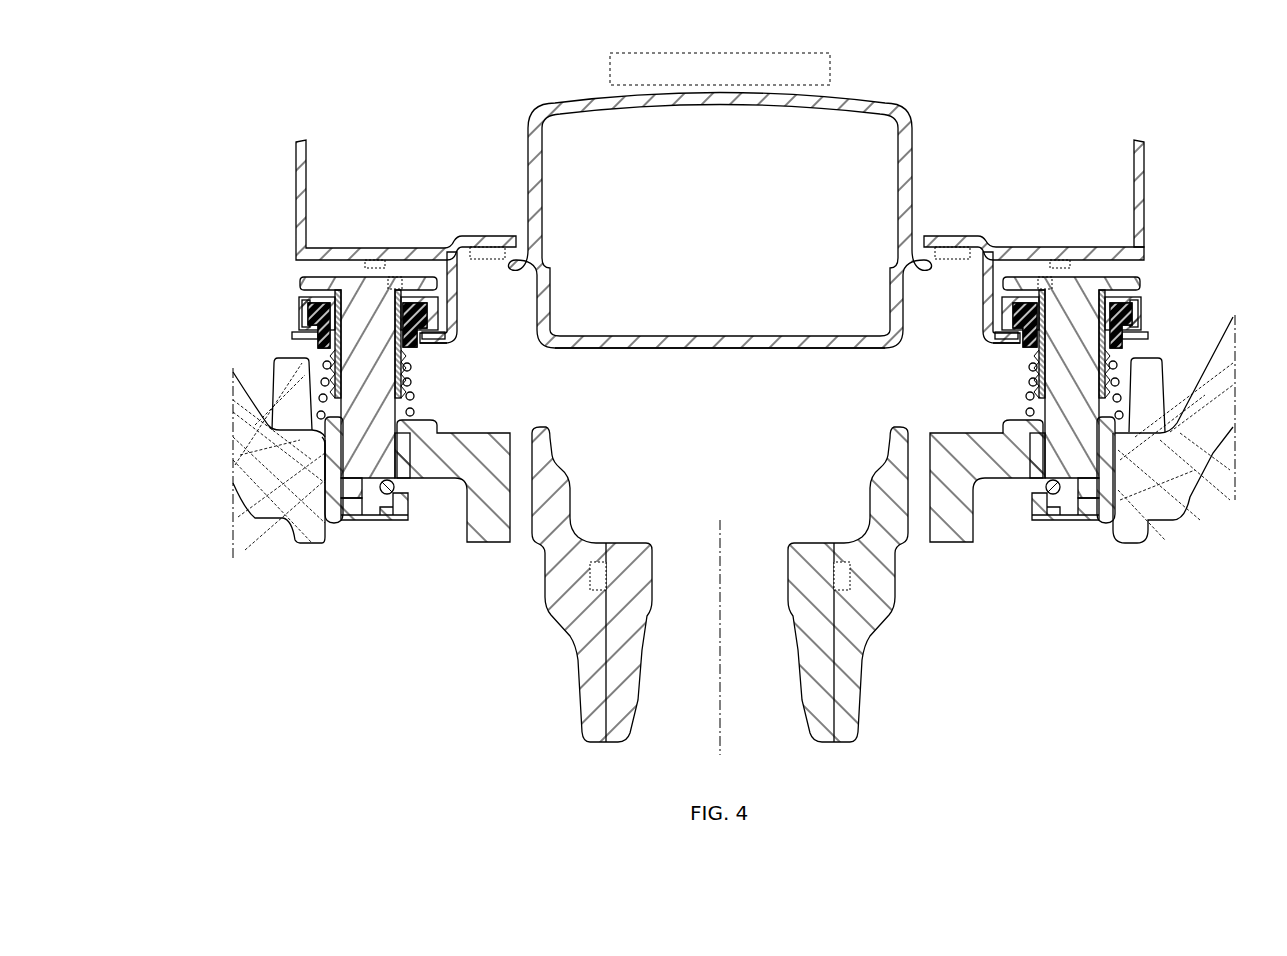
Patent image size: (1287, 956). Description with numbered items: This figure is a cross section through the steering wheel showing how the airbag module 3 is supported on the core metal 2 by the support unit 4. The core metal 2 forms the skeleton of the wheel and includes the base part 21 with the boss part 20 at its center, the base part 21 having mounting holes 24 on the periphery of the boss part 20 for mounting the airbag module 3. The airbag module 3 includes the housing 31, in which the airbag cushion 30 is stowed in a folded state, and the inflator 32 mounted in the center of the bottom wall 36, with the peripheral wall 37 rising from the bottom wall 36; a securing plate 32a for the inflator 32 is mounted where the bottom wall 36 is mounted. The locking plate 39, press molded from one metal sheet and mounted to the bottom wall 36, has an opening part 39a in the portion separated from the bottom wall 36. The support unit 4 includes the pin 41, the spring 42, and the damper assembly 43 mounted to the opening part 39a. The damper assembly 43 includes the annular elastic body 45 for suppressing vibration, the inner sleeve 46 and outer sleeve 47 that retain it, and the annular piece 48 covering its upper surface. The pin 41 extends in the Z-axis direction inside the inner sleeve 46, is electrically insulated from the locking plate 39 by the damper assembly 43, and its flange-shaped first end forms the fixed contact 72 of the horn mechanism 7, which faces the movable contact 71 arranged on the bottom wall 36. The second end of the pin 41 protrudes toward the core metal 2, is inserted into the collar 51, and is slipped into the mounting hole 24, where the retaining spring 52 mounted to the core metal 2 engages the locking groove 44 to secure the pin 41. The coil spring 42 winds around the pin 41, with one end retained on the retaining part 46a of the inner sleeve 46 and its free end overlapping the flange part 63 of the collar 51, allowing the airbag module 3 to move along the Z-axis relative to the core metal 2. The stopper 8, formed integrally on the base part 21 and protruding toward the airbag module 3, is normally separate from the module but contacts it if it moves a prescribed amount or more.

The core metal 2 is at (822, 505).
The airbag module 3 is at (760, 164).
The support unit 4 is at (686, 337).
The horn mechanism 7 is at (724, 227).
The stopper 8 is at (723, 452).
The boss part 20 is at (552, 622).
The base part 21 is at (285, 498).
The mounting hole 24 is at (420, 470).
The airbag cushion 30 is at (836, 74).
The housing 31 is at (1060, 207).
The inflator 32 is at (898, 110).
The securing plate 32a is at (622, 350).
The bottom wall 36 is at (1060, 255).
The peripheral wall 37 is at (1147, 200).
The locking plate 39 is at (458, 282).
The opening part 39a is at (440, 345).
The pin 41 is at (303, 274).
The spring 42 is at (416, 408).
The damper assembly 43 is at (294, 268).
The locking groove 44 is at (385, 516).
The elastic body 45 is at (306, 325).
The inner sleeve 46 is at (268, 436).
The retaining part 46a is at (408, 370).
The outer sleeve 47 is at (303, 312).
The annular piece 48 is at (324, 296).
The collar 51 is at (330, 455).
The retaining spring 52 is at (381, 494).
The flange part 63 is at (258, 510).
The movable contact 71 is at (375, 260).
The fixed contact 72 is at (396, 277).